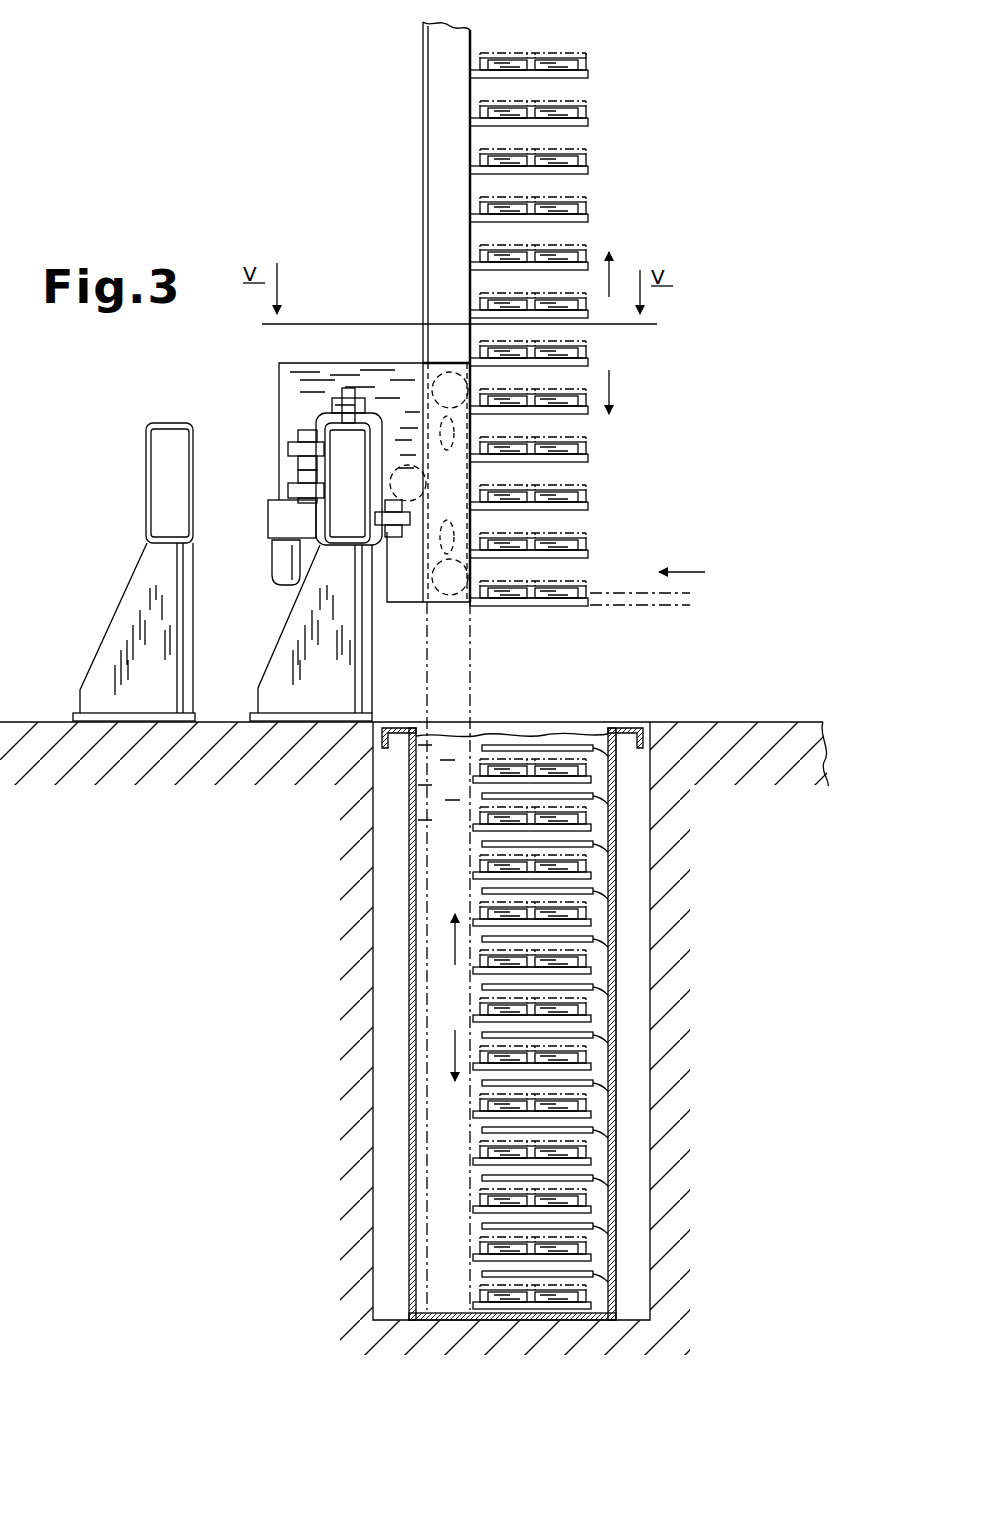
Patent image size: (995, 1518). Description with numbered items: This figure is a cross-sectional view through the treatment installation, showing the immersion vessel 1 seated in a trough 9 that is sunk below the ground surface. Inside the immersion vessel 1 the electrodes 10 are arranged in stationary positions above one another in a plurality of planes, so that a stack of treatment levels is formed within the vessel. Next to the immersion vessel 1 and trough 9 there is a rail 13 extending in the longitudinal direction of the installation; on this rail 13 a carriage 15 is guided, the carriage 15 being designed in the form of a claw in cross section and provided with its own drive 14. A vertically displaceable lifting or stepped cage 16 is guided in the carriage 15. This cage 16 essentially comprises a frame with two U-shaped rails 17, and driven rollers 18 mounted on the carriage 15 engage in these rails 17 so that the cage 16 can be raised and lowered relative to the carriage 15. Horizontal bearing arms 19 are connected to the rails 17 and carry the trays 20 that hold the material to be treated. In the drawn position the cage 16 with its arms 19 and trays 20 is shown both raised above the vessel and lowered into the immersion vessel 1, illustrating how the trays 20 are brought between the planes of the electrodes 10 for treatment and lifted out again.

The immersion vessel 1 is at (409, 957).
The trough 9 is at (373, 1068).
The electrodes 10 is at (594, 848).
The rail 13 is at (353, 450).
The drive 14 is at (280, 575).
The carriage 15 is at (286, 407).
The lifting or stepped cage 16 is at (624, 138).
The U-shaped rail 17 is at (440, 140).
The driven roller 18 is at (420, 366).
The horizontal bearing arm 19 is at (586, 204).
The tray 20 is at (586, 54).